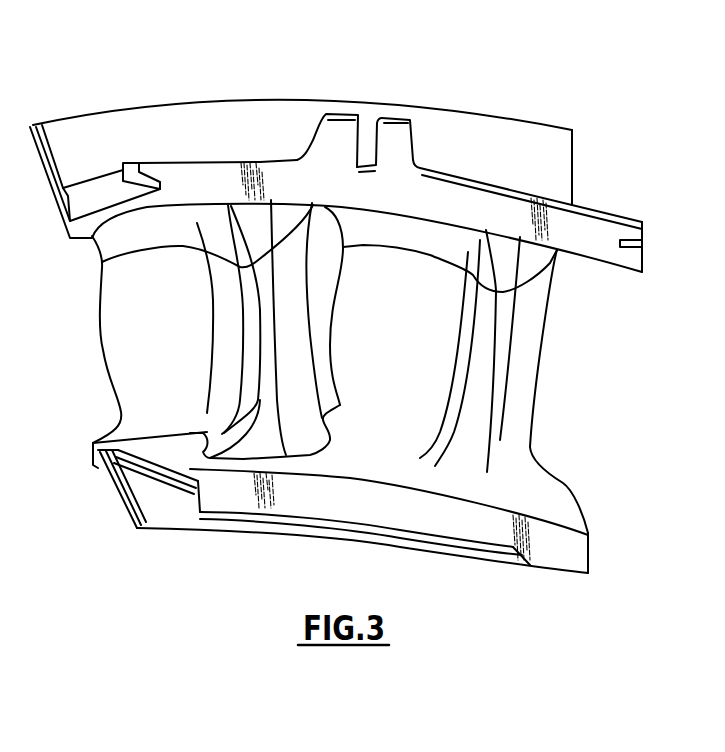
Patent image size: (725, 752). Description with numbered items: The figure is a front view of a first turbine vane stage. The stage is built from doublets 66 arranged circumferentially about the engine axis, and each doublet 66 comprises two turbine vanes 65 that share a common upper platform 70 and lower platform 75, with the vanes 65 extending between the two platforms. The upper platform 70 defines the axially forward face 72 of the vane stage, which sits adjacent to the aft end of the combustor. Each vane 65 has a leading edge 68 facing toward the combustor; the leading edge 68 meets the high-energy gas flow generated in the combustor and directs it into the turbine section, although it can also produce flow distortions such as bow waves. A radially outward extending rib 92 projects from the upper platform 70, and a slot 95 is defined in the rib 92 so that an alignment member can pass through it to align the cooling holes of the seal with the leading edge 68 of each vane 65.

The turbine vane 65 is at (180, 332).
The doublet 66 is at (136, 572).
The leading edge 68 is at (511, 428).
The upper platform 70 is at (620, 205).
The forward face 72 is at (398, 187).
The lower platform 75 is at (482, 517).
The rib 92 is at (325, 138).
The slot 95 is at (372, 105).